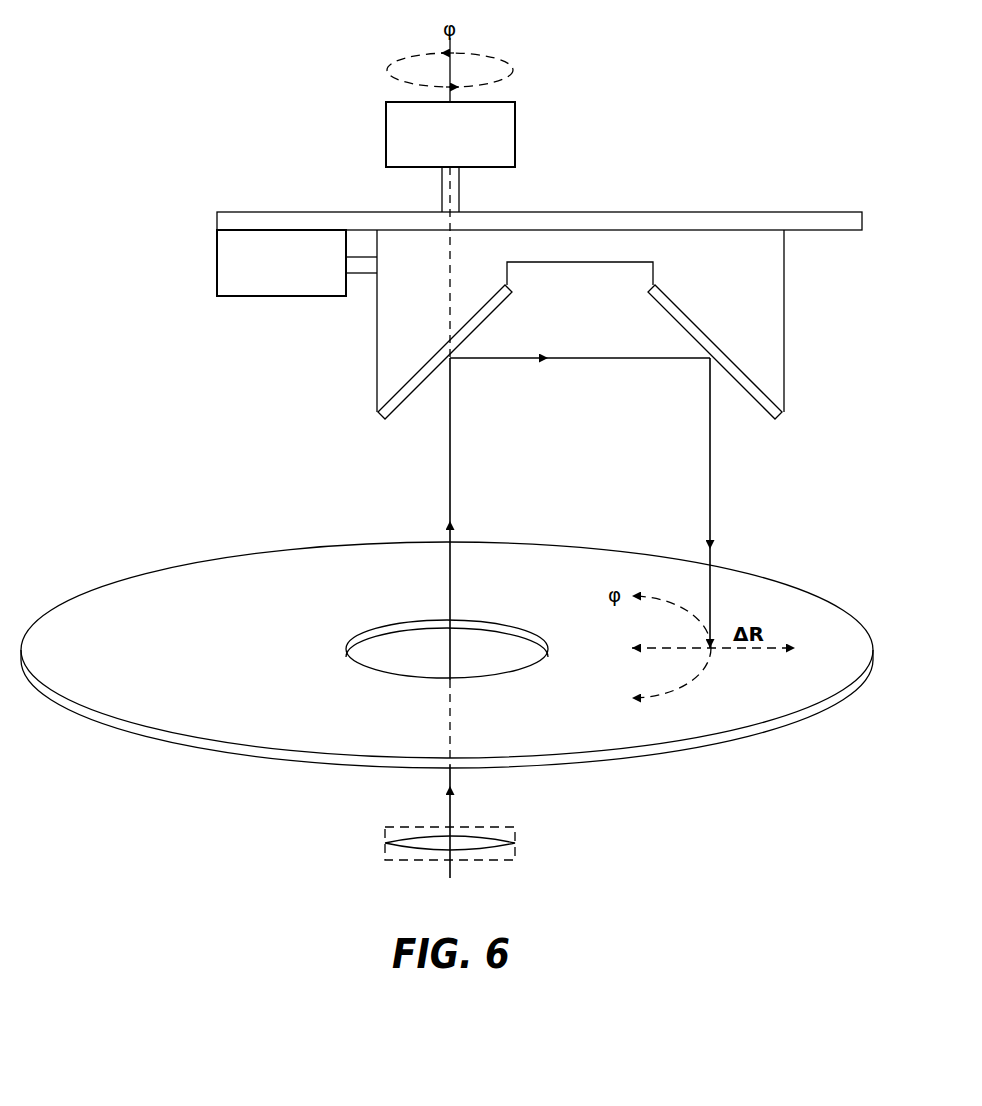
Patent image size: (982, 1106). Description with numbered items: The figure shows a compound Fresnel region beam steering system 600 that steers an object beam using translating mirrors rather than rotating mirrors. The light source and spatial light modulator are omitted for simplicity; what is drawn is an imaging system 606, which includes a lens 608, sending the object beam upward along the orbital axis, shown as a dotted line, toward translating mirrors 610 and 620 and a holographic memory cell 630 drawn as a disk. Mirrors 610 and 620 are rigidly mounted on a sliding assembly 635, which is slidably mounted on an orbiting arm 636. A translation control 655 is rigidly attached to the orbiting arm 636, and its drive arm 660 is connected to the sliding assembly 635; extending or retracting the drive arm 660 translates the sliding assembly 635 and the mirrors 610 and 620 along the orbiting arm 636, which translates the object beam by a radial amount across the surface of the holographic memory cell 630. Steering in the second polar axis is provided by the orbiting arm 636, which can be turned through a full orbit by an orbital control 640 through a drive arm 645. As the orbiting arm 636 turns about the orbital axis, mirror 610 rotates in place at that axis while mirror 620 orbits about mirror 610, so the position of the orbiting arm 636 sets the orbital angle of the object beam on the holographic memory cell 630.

The compound Fresnel region beam steering system 600 is at (159, 843).
The imaging system 606 is at (518, 825).
The lens 608 is at (519, 843).
The translating mirror 610 is at (496, 323).
The translating mirror 620 is at (671, 323).
The holographic memory cell 630 is at (299, 766).
The sliding assembly 635 is at (375, 388).
The orbiting arm 636 is at (714, 210).
The orbital control 640 is at (384, 128).
The drive arm 645 is at (440, 187).
The translation control 655 is at (215, 258).
The drive arm 660 is at (361, 278).